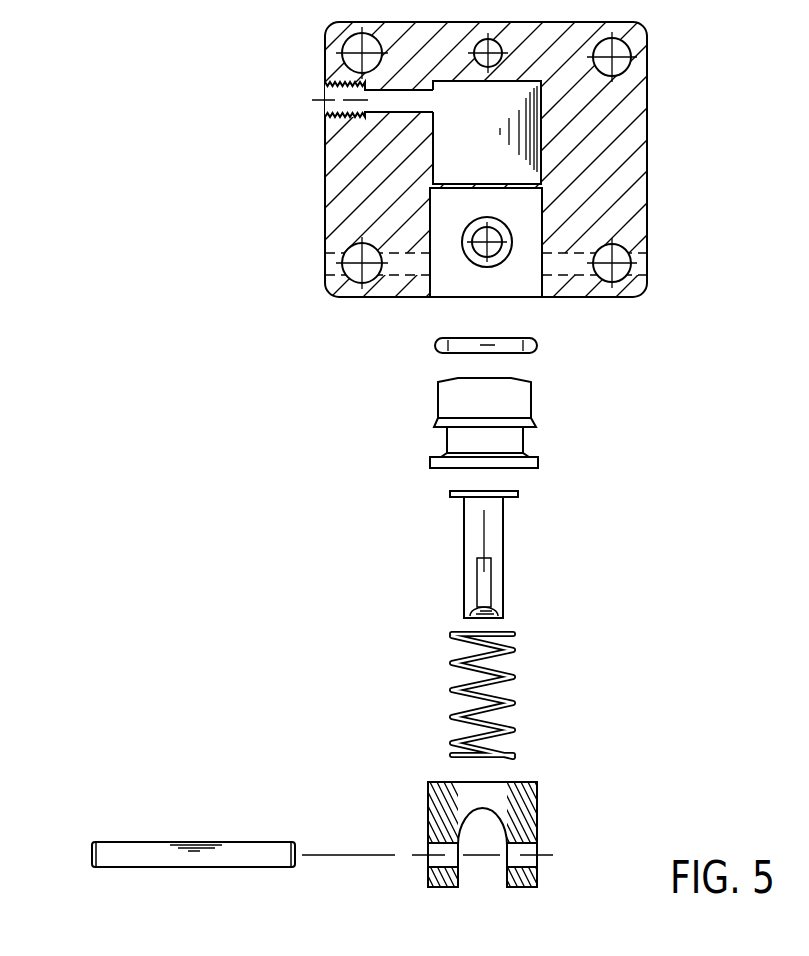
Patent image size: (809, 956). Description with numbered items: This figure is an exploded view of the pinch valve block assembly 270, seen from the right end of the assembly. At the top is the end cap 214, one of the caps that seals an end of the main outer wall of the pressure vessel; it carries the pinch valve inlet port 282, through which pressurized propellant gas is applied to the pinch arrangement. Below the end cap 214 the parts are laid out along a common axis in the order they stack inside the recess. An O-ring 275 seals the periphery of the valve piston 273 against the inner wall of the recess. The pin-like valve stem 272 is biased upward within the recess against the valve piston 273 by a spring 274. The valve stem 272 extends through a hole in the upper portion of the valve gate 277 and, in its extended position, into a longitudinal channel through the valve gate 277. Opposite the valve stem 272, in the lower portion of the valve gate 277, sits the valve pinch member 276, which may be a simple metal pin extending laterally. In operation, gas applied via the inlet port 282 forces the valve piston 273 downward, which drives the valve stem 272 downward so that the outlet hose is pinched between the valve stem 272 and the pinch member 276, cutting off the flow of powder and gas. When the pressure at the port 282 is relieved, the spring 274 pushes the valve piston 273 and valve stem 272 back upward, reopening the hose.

The end cap 214 is at (326, 212).
The pinch valve inlet port 282 is at (326, 99).
The O-ring 275 is at (437, 346).
The valve piston 273 is at (437, 418).
The valve stem 272 is at (473, 545).
The pinch valve block assembly 270 is at (592, 566).
The spring 274 is at (450, 715).
The valve gate 277 is at (432, 802).
The valve pinch member 276 is at (135, 852).